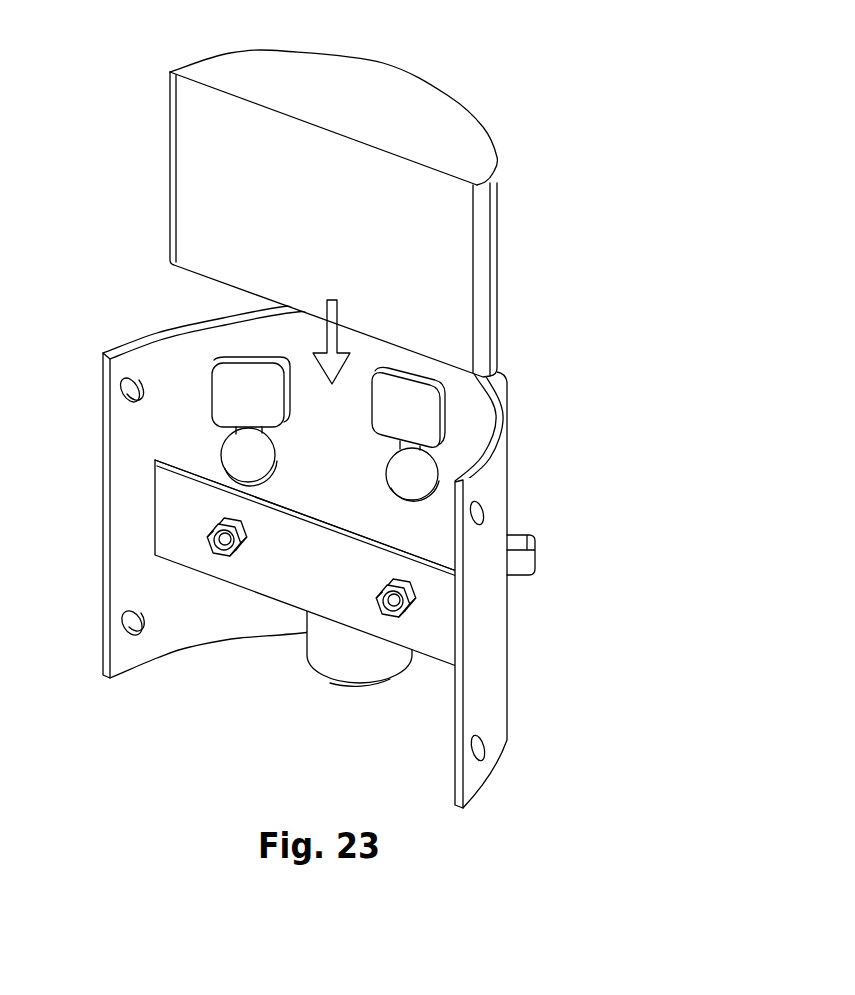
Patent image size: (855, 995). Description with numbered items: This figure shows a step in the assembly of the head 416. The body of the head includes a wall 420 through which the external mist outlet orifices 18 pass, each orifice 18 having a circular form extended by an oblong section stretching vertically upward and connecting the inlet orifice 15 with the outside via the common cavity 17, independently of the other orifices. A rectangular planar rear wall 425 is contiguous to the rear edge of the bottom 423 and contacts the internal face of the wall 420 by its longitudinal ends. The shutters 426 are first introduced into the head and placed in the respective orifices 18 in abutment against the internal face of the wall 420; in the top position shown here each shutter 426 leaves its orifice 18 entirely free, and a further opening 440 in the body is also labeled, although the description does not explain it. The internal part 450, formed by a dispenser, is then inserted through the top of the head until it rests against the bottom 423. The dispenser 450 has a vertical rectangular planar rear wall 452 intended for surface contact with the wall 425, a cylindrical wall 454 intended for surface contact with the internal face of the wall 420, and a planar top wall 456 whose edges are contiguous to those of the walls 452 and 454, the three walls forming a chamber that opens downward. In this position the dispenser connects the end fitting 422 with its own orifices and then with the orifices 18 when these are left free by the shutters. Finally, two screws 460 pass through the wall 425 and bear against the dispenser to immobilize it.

The inlet orifice 15 is at (333, 692).
The common cavity 17 is at (338, 478).
The external mist outlet orifice 18 is at (434, 465).
The head 416 is at (550, 319).
The wall 420 is at (487, 636).
The end fitting 422 is at (367, 685).
The bottom 423 is at (424, 544).
The rear wall 425 is at (280, 603).
The shutter 426 is at (242, 362).
The keyhole opening 440 is at (218, 425).
The internal part 450 is at (470, 126).
The rear wall 452 is at (200, 197).
The cylindrical wall 454 is at (497, 257).
The top wall 456 is at (408, 90).
The screw 460 is at (223, 550).